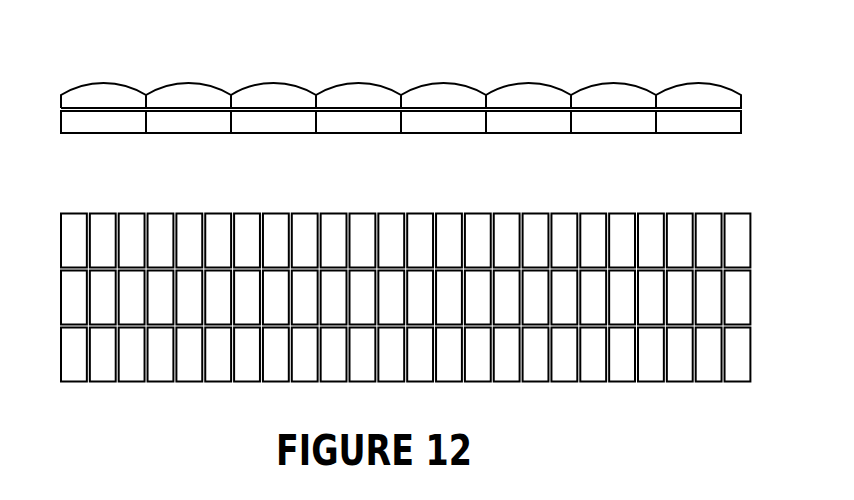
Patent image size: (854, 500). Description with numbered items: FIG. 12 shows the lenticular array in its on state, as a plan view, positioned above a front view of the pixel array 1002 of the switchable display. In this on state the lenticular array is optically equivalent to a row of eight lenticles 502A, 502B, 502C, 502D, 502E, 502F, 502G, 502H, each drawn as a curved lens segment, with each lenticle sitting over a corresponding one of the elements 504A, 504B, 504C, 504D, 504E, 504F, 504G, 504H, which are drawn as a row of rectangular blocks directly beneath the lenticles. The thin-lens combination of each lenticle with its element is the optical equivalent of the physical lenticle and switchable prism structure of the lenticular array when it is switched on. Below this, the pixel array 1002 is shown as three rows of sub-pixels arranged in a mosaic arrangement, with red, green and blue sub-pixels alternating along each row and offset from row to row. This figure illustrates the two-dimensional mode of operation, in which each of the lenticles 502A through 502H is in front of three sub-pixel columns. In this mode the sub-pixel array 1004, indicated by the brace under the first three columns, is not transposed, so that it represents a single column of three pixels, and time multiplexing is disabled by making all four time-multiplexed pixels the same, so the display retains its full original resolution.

The lenticle 502A is at (107, 83).
The lenticle 502B is at (190, 83).
The lenticle 502C is at (277, 83).
The lenticle 502D is at (357, 83).
The lenticle 502E is at (441, 83).
The lenticle 502F is at (527, 83).
The lenticle 502G is at (611, 83).
The lenticle 502H is at (696, 83).
The element 504A is at (103, 133).
The element 504B is at (188, 133).
The element 504C is at (273, 133).
The element 504D is at (357, 133).
The element 504E is at (442, 133).
The element 504F is at (527, 133).
The element 504G is at (611, 133).
The element 504H is at (696, 133).
The pixel array 1002 is at (441, 324).
The sub-pixel array 1004 is at (55, 385).